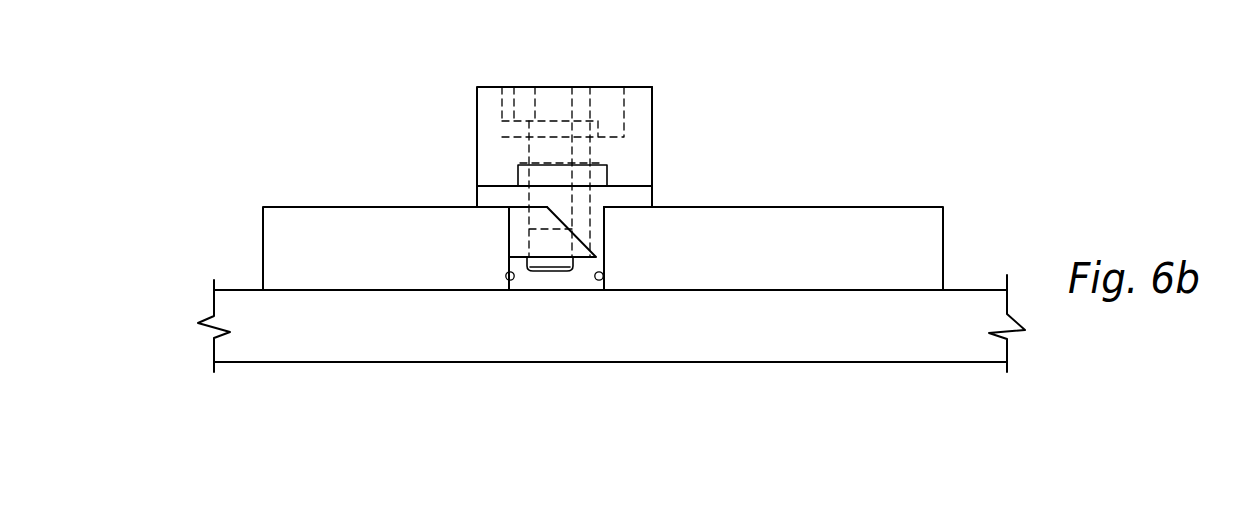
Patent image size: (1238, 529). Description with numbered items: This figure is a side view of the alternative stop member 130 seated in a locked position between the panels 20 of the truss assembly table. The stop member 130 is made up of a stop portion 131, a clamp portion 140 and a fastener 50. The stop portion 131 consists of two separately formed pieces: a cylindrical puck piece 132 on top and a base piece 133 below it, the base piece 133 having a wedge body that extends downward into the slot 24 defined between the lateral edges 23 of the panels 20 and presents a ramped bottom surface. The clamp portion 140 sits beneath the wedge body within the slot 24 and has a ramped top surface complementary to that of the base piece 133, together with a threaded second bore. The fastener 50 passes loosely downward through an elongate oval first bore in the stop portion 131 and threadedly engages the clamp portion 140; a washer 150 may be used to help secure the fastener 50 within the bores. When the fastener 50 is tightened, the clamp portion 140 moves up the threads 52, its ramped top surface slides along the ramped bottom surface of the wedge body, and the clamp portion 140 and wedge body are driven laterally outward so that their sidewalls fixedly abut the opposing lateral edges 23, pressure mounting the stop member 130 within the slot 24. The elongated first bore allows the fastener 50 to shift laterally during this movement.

The panels 20 is at (272, 240).
The lateral edges 23 is at (505, 273).
The slot 24 is at (520, 283).
The fastener 50 is at (567, 276).
The threads 52 is at (548, 276).
The stop member 130 is at (539, 132).
The stop portion 131 is at (477, 108).
The cylindrical puck piece 132 is at (652, 130).
The base piece 133 is at (652, 191).
The clamp portion 140 is at (509, 228).
The washer 150 is at (511, 132).